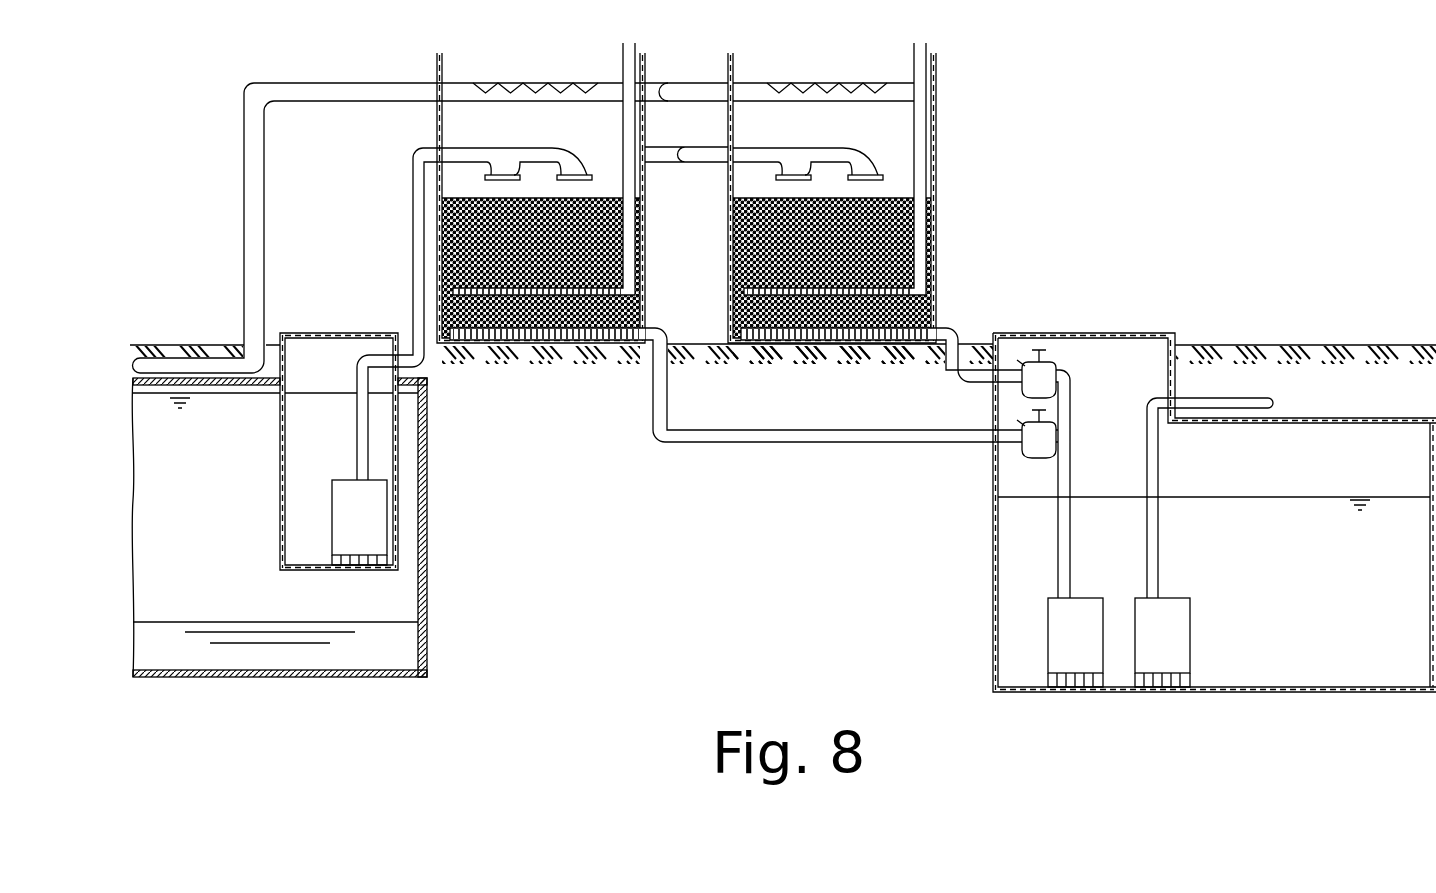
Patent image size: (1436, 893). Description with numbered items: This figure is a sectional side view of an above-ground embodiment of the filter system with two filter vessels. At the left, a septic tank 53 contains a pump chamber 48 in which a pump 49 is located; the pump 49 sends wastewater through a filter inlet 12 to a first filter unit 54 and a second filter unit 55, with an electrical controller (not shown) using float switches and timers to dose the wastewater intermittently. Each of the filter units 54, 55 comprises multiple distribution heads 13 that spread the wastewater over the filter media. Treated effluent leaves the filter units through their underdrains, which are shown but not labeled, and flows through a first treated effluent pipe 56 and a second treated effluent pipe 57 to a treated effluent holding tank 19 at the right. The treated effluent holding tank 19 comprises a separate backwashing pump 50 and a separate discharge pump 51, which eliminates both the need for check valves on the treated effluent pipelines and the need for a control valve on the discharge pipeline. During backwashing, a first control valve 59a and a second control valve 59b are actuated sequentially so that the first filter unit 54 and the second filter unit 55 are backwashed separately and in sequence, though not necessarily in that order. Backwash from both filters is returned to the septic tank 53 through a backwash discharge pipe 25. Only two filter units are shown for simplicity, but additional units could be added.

The filter inlet 12 is at (424, 358).
The distribution heads 13 is at (504, 167).
The treated effluent holding tank 19 is at (993, 575).
The backwash discharge pipe 25 is at (244, 270).
The pump chamber 48 is at (280, 516).
The pump 49 is at (380, 498).
The backwashing pump 50 is at (1077, 618).
The discharge pump 51 is at (1182, 622).
The septic tank 53 is at (427, 612).
The first filter unit 54 is at (437, 125).
The second filter unit 55 is at (936, 130).
The first treated effluent pipe 56 is at (850, 443).
The second treated effluent pipe 57 is at (965, 382).
The first control valve 59a is at (1052, 440).
The second control valve 59b is at (1040, 368).